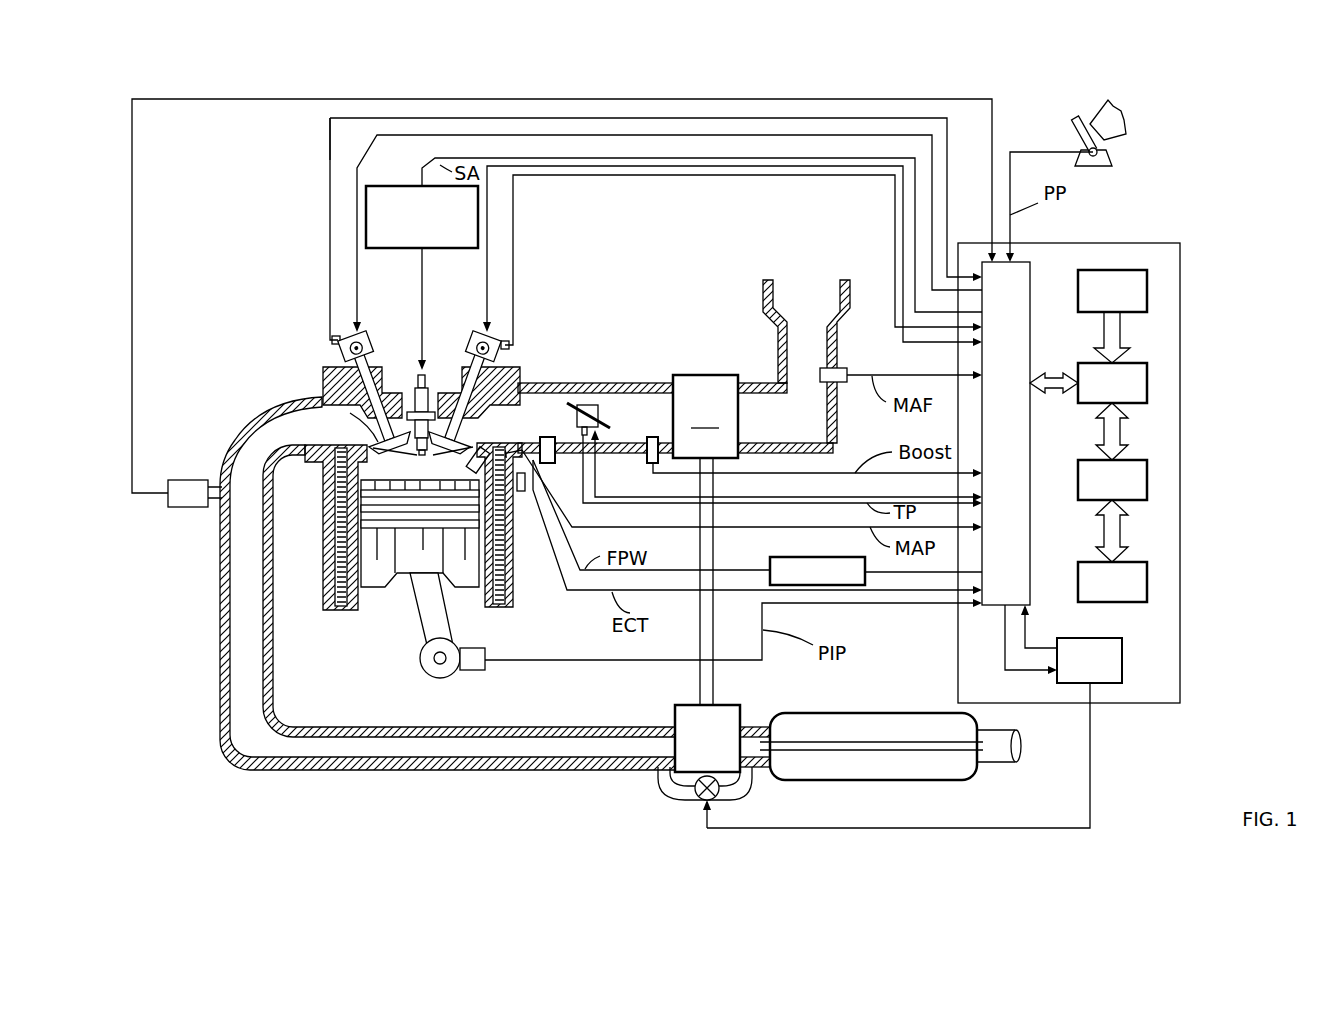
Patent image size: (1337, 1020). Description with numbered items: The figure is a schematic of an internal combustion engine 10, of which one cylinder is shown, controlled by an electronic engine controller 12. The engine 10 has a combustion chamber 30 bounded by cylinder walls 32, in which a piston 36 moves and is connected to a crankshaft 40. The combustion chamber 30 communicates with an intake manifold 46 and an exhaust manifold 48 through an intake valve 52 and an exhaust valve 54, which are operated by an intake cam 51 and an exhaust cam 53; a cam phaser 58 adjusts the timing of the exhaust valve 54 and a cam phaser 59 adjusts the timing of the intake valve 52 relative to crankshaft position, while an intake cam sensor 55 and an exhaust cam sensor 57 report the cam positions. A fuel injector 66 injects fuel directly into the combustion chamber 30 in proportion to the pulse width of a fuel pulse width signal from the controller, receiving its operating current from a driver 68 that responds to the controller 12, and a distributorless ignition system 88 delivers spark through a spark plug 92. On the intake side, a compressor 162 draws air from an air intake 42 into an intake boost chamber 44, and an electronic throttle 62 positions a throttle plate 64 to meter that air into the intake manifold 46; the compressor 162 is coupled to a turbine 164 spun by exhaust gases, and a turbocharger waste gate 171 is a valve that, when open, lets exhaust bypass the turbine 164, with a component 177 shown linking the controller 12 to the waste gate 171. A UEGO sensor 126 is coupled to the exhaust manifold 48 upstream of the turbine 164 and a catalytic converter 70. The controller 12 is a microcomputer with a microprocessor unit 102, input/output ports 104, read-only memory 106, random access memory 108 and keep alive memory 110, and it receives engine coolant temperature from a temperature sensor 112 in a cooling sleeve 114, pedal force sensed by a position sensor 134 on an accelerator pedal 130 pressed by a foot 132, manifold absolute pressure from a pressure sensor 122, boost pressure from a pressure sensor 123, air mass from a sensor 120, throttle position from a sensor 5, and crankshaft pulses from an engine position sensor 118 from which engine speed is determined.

The throttle position sensor 5 is at (583, 436).
The internal combustion engine 10 is at (256, 317).
The electronic engine controller 12 is at (1168, 238).
The combustion chamber 30 is at (418, 460).
The cylinder walls 32 is at (362, 610).
The piston 36 is at (405, 560).
The crankshaft 40 is at (430, 675).
The air intake 42 is at (791, 428).
The intake boost chamber 44 is at (630, 428).
The intake manifold 46 is at (531, 428).
The exhaust manifold 48 is at (280, 438).
The intake cam 51 is at (473, 343).
The intake valve 52 is at (440, 402).
The exhaust cam 53 is at (375, 340).
The exhaust valve 54 is at (320, 395).
The intake cam sensor 55 is at (498, 352).
The exhaust cam sensor 57 is at (340, 345).
The cam phaser 58 is at (358, 322).
The cam phaser 59 is at (480, 322).
The electronic throttle 62 is at (598, 402).
The throttle plate 64 is at (575, 402).
The fuel injector 66 is at (495, 455).
The driver 68 is at (797, 557).
The catalytic converter 70 is at (813, 712).
The distributorless ignition system 88 is at (383, 186).
The spark plug 92 is at (416, 402).
The microprocessor unit 102 is at (1150, 378).
The input/output ports 104 is at (1032, 272).
The read-only memory 106 is at (1150, 290).
The random access memory 108 is at (1150, 478).
The keep alive memory 110 is at (1150, 580).
The temperature sensor 112 is at (521, 492).
The cooling sleeve 114 is at (512, 580).
The engine position sensor 118 is at (470, 672).
The air mass sensor 120 is at (901, 392).
The pressure sensor 122 is at (547, 463).
The pressure sensor 123 is at (645, 460).
The Universal Exhaust Gas Oxygen (UEGO) sensor 126 is at (178, 508).
The accelerator pedal 130 is at (1075, 130).
The foot 132 is at (1120, 110).
The position sensor 134 is at (1108, 152).
The compressor 162 is at (705, 540).
The turbine 164 is at (722, 738).
The turbocharger waste gate 171 is at (697, 800).
The wastegate actuator 177 is at (914, 716).